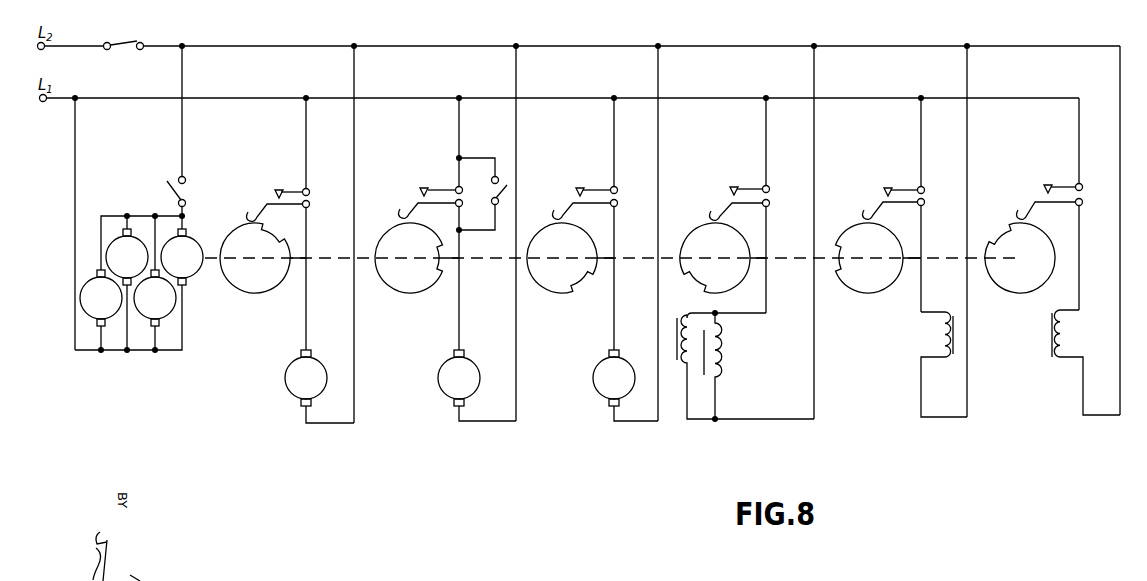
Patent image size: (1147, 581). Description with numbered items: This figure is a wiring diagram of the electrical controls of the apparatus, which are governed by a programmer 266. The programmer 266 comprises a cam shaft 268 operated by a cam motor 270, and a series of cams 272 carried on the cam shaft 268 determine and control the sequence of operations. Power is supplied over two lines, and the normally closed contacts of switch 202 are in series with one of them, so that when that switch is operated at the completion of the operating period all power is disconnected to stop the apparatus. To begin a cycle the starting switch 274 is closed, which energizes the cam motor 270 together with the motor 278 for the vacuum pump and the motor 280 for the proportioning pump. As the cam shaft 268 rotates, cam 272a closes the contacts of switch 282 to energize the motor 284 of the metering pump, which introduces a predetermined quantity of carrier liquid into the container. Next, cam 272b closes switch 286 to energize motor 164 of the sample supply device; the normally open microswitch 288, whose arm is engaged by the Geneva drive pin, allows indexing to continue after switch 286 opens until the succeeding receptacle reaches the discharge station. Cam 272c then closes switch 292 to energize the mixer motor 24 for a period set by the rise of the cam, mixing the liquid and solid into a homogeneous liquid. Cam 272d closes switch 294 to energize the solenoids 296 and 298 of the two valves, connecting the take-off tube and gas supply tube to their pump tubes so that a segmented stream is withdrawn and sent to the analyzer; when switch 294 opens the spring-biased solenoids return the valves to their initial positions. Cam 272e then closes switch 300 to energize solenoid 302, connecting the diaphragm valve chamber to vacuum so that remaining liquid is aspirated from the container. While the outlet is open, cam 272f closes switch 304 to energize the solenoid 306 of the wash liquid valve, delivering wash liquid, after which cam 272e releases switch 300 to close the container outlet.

The switch 202 is at (131, 32).
The starting switch 274 is at (146, 131).
The motor 278 is at (115, 272).
The cam motor 270 is at (193, 242).
The motor 280 is at (95, 327).
The cams 272 is at (269, 286).
The cam shaft 268 is at (606, 282).
The switch 282 is at (278, 192).
The cam 272a is at (255, 276).
The motor 284 is at (298, 386).
The switch 286 is at (430, 191).
The microswitch 288 is at (505, 194).
The cam 272b is at (408, 276).
The motor 164 is at (454, 385).
The switch 292 is at (585, 190).
The cam 272c is at (562, 276).
The mixer motor 24 is at (604, 385).
The solenoid 296 is at (717, 366).
The solenoid 298 is at (735, 366).
The switch 294 is at (740, 191).
The cam 272d is at (708, 246).
The switch 300 is at (894, 190).
The cam 272e is at (869, 276).
The solenoid 302 is at (926, 364).
The switch 304 is at (1050, 189).
The cam 272f is at (1017, 272).
The solenoid 306 is at (1086, 362).
The programmer 266 is at (584, 490).